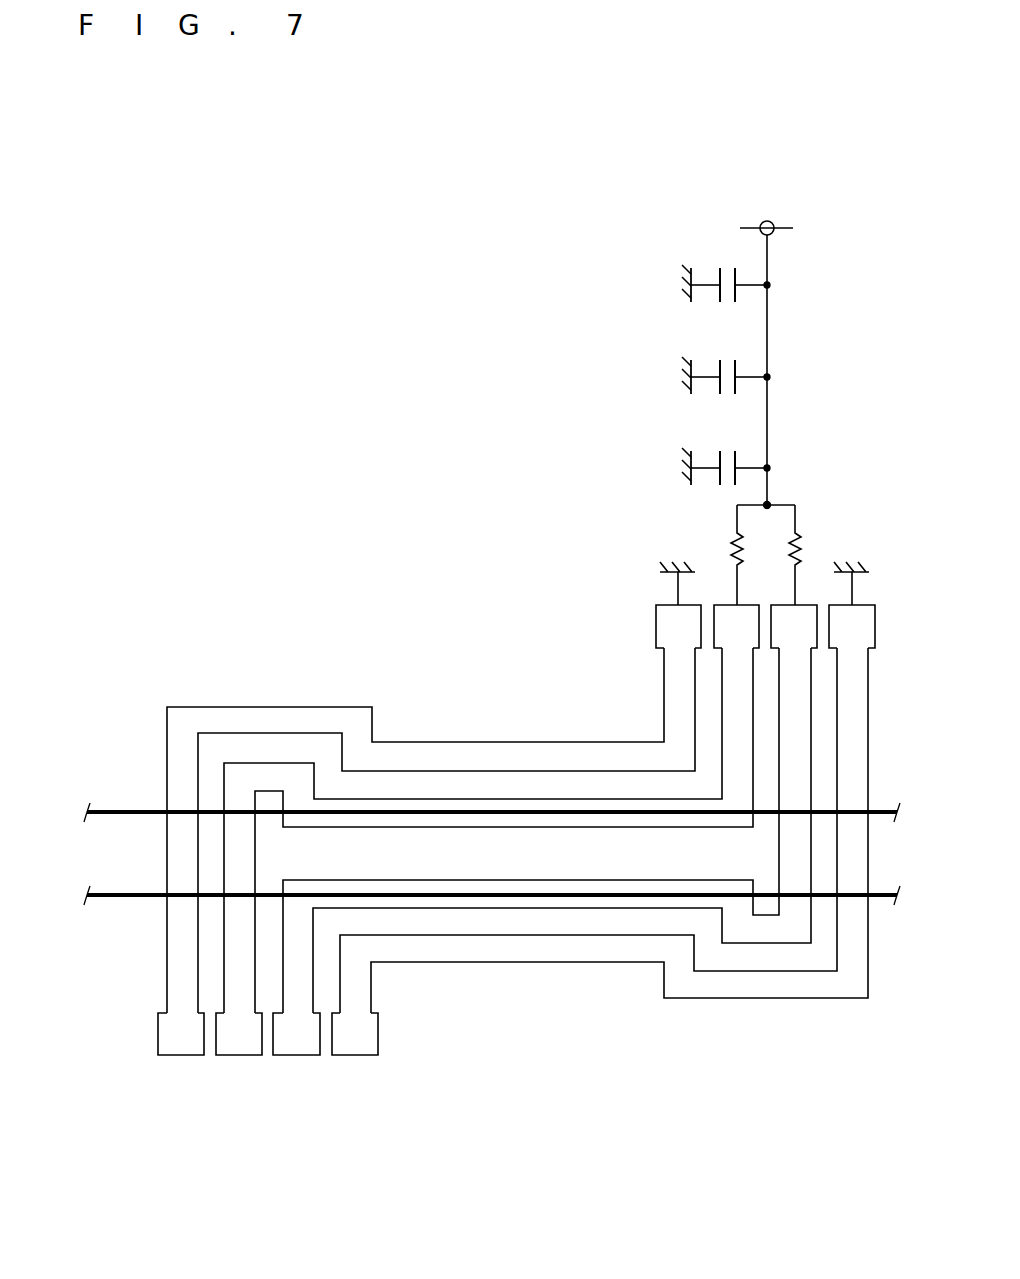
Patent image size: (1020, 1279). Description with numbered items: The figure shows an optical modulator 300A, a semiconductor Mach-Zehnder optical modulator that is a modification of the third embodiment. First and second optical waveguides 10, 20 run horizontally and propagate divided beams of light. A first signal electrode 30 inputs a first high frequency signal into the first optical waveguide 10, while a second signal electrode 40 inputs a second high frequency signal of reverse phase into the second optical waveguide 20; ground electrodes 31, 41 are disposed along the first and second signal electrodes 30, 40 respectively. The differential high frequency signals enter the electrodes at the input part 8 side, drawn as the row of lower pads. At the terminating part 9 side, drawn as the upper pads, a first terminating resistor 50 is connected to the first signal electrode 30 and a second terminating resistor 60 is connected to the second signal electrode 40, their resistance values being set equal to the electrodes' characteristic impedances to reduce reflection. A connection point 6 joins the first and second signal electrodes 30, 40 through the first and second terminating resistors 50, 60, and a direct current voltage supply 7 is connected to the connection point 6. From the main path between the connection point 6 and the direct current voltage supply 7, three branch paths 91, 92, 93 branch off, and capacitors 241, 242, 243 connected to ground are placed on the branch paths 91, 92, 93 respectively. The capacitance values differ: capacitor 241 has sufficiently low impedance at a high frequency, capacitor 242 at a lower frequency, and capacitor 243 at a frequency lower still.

The direct current voltage supply 7 is at (770, 221).
The capacitor 243 is at (726, 268).
The capacitor 242 is at (726, 360).
The capacitor 241 is at (726, 451).
The branch path 93 is at (656, 285).
The branch path 92 is at (656, 377).
The branch path 91 is at (656, 468).
The connection point 6 is at (770, 502).
The first terminating resistor 50 is at (730, 549).
The second terminating resistor 60 is at (803, 549).
The terminating part 9 is at (883, 606).
The input part 8 is at (388, 1014).
The optical modulator 300A is at (276, 538).
The ground electrode 31 is at (184, 1056).
The first signal electrode 30 is at (243, 1056).
The second signal electrode 40 is at (301, 1056).
The ground electrode 41 is at (358, 1056).
The first optical waveguide 10 is at (122, 810).
The second optical waveguide 20 is at (122, 898).